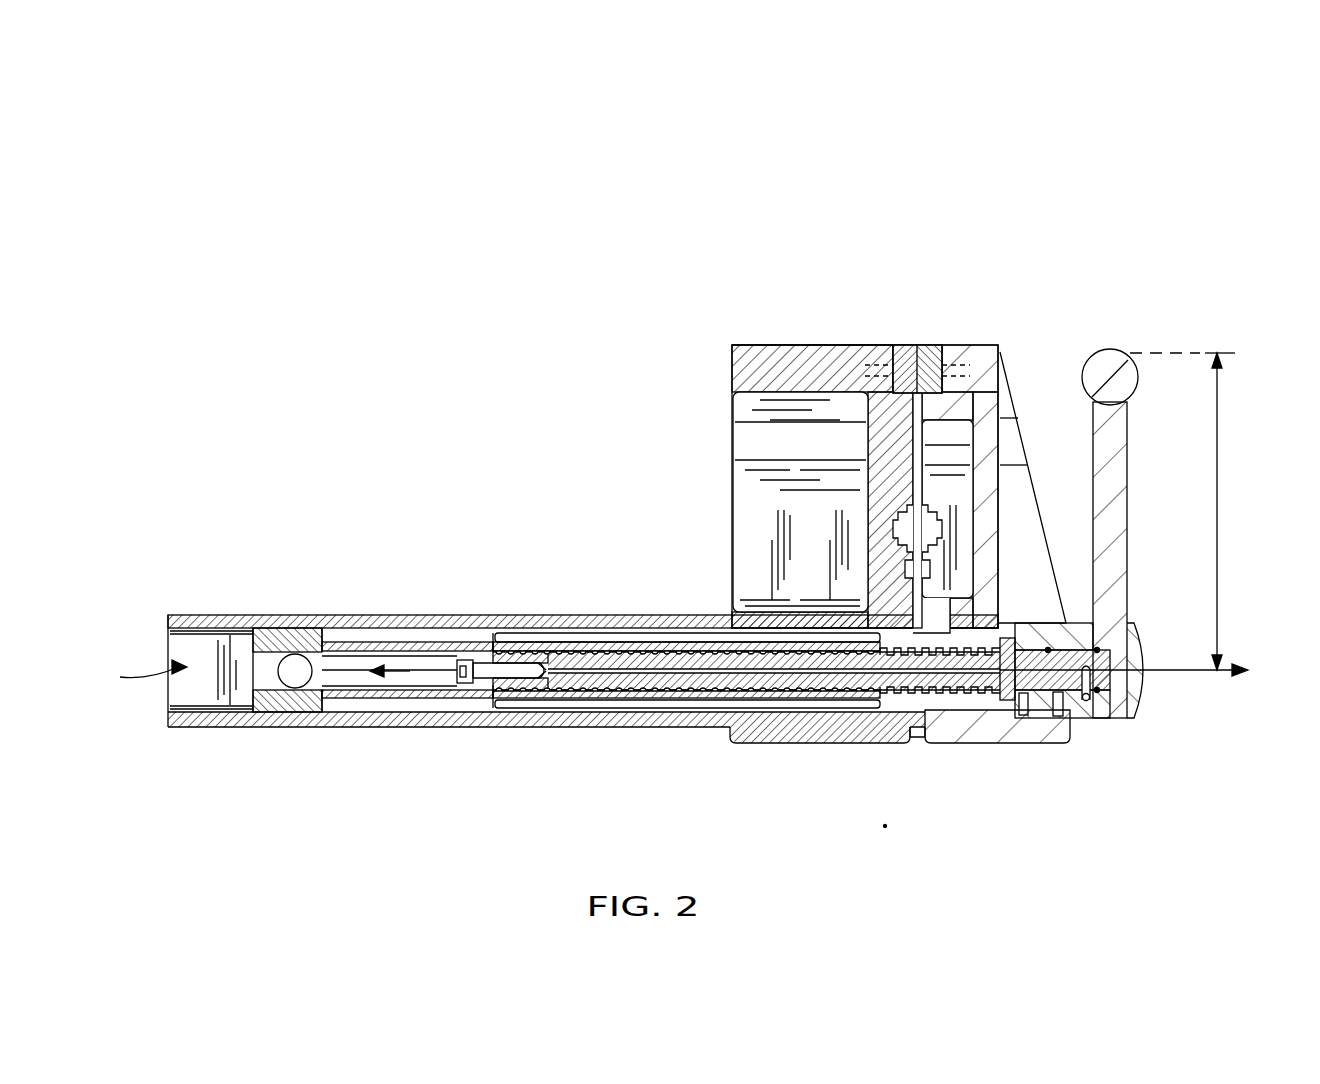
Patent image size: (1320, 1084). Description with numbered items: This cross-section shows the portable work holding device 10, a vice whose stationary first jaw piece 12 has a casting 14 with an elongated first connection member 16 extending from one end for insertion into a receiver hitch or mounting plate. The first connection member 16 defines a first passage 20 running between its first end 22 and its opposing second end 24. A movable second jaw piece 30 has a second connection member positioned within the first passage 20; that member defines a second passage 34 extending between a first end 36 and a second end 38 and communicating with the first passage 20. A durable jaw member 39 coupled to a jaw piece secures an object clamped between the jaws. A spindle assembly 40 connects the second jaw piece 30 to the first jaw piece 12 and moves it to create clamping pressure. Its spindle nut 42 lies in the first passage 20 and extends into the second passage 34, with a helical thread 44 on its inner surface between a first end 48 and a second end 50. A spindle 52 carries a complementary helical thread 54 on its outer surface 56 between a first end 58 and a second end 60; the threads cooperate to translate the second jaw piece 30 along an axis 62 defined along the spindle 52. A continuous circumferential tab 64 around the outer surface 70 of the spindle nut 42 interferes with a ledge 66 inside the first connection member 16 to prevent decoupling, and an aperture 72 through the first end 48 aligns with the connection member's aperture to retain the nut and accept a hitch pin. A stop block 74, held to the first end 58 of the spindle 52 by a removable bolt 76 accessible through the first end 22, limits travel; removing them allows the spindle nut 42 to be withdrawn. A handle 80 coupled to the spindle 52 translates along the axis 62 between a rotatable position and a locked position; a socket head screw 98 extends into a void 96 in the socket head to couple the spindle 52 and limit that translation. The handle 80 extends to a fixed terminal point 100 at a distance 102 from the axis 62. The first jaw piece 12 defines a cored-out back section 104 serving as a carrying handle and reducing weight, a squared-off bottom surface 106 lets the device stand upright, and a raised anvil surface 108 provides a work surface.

The portable work holding device 10 is at (978, 260).
The first jaw piece 12 is at (830, 348).
The casting 14 is at (735, 366).
The first connection member 16 is at (185, 622).
The first passage 20 is at (131, 677).
The first end 22 is at (168, 715).
The second end 24 is at (912, 745).
The second jaw piece 30 is at (1002, 362).
The second passage 34 is at (955, 740).
The first end 36 is at (470, 735).
The second end 38 is at (1005, 720).
The jaw member 39 is at (930, 345).
The spindle assembly 40 is at (628, 603).
The spindle nut 42 is at (305, 700).
The helical thread 44 is at (545, 718).
The first end 48 is at (248, 698).
The second end 50 is at (865, 745).
The spindle 52 is at (650, 735).
The complementary helical thread 54 is at (688, 650).
The outer surface 56 is at (960, 637).
The first end 58 is at (483, 650).
The second end 60 is at (1125, 720).
The axis 62 is at (1172, 673).
The tab 64 is at (262, 628).
The ledge 66 is at (286, 628).
The outer surface 70 is at (310, 628).
The aperture 72 is at (295, 675).
The stop block 74 is at (458, 733).
The bolt 76 is at (505, 660).
The handle 80 is at (1118, 505).
The void 96 is at (1058, 720).
The socket head screw 98 is at (1086, 705).
The fixed terminal point 100 is at (1114, 350).
The distance 102 is at (1222, 512).
The cored-out back section 104 is at (737, 472).
The bottom surface 106 is at (752, 748).
The anvil surface 108 is at (772, 346).